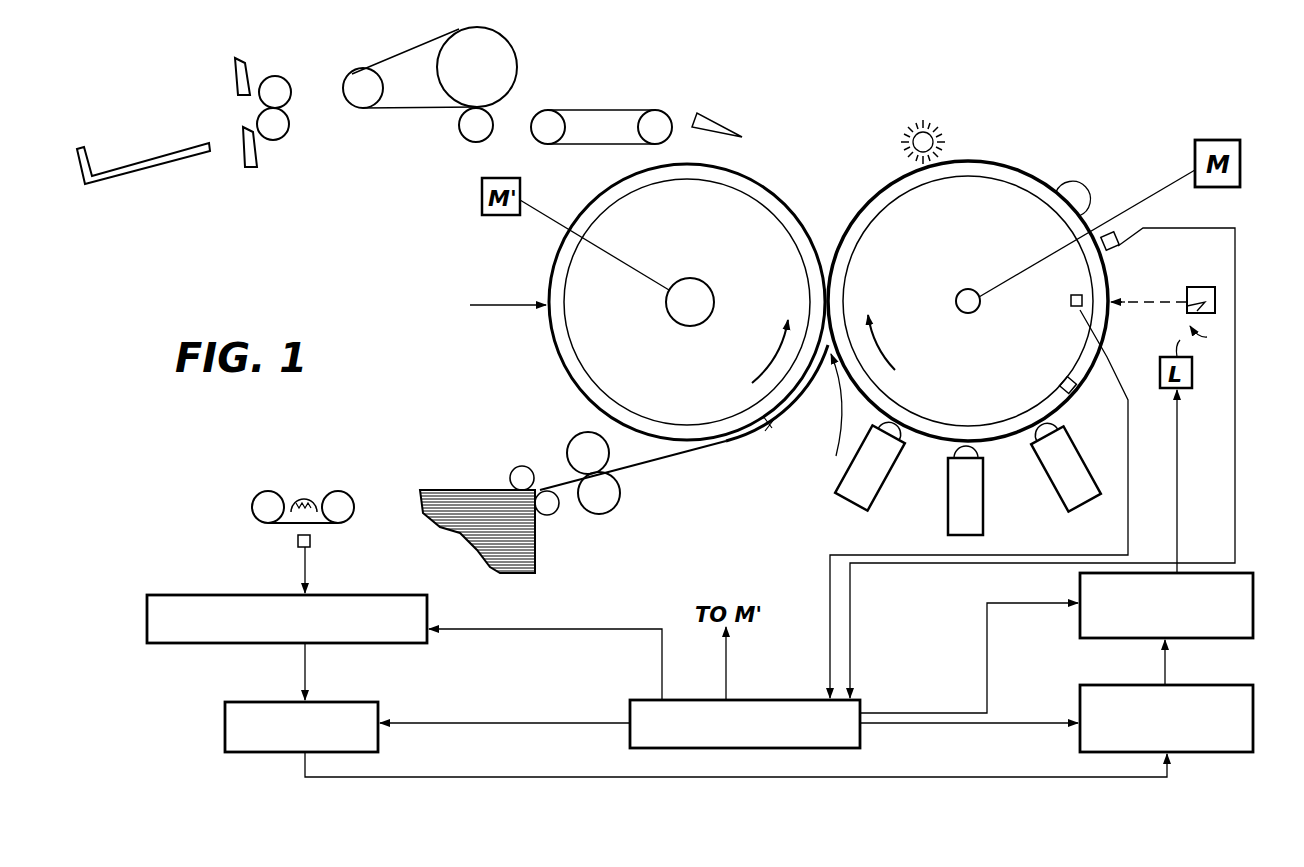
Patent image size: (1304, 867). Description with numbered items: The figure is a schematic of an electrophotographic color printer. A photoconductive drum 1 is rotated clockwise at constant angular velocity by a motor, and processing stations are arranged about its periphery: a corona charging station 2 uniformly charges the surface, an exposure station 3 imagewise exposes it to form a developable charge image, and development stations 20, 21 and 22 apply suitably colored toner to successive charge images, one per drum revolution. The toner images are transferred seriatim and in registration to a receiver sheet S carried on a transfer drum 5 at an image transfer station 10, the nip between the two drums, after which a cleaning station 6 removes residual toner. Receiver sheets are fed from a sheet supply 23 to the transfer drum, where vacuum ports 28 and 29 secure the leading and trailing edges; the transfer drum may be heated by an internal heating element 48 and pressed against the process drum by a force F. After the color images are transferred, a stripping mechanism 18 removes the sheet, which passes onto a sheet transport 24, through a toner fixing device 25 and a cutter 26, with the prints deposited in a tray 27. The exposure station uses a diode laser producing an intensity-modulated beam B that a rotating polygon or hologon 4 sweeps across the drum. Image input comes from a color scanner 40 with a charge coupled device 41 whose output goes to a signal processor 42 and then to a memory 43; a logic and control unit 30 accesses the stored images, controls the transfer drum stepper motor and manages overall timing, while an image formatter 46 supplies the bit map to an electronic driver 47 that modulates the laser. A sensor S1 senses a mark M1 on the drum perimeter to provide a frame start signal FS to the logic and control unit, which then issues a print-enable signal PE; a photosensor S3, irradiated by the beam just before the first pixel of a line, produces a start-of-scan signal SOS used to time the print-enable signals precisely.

The photoconductive drum 1 is at (1000, 162).
The corona charging station 2 is at (1078, 177).
The exposure station 3 is at (1123, 288).
The rotating polygon or hologon 4 is at (1200, 287).
The transfer drum 5 is at (560, 358).
The cleaning station 6 is at (940, 138).
The image transfer station 10 is at (827, 415).
The stripping mechanism 18 is at (727, 108).
The development station 20 is at (1072, 497).
The development station 21 is at (975, 499).
The development station 22 is at (878, 482).
The sheet supply 23 is at (442, 490).
The sheet transport 24 is at (578, 110).
The toner fixing device 25 is at (520, 52).
The cutter 26 is at (280, 71).
The tray 27 is at (128, 124).
The vacuum port 28 is at (768, 423).
The vacuum port 29 is at (610, 193).
The logic and control unit 30 is at (863, 700).
The color scanner 40 is at (251, 518).
The charge coupled device 41 is at (310, 541).
The signal processor 42 is at (428, 622).
The memory 43 is at (378, 707).
The image formatter 46 is at (1080, 702).
The electronic driver 47 is at (1080, 622).
The internal heating element 48 is at (670, 316).
The receiver sheet S is at (660, 458).
The sensor S1 is at (1118, 236).
The photosensor S3 is at (1071, 301).
The mark M1 is at (1064, 378).
The beam B is at (1207, 339).
The force F is at (508, 290).
The frame start signal FS is at (1042, 452).
The start-of-scan signal SOS is at (1131, 353).
The print-enable signal PE is at (969, 647).